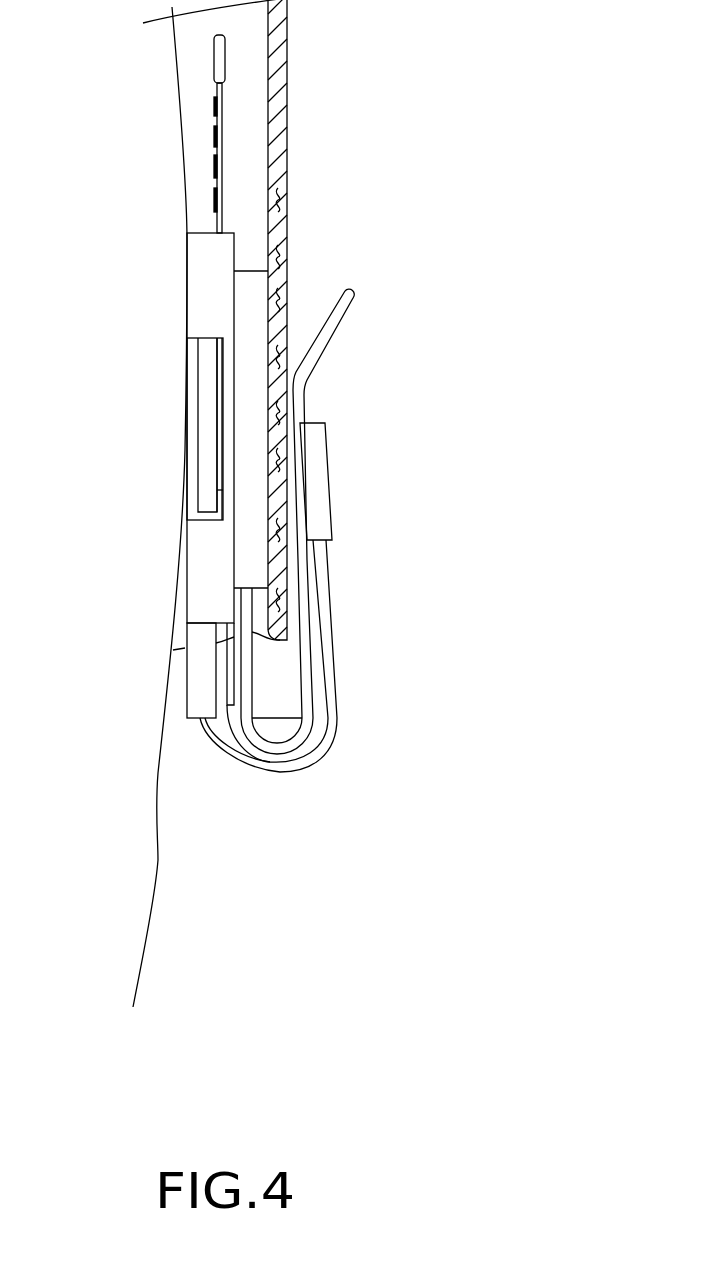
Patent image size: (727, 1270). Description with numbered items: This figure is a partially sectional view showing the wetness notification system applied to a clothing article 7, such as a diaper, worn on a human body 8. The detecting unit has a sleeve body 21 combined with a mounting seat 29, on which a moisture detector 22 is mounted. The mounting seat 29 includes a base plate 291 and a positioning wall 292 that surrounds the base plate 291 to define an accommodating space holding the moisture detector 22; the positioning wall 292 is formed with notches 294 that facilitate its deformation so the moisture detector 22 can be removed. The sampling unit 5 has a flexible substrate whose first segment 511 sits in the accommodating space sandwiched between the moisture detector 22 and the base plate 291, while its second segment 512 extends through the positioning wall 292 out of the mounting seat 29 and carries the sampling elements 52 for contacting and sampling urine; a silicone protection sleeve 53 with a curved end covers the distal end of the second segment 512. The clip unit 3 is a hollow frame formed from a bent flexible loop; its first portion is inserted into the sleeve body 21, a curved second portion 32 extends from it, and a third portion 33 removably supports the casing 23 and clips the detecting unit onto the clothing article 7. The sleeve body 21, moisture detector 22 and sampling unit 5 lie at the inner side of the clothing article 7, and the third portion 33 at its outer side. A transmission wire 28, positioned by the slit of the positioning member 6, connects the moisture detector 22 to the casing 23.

The clip unit 3 is at (346, 581).
The sampling unit 5 is at (212, 134).
The positioning member 6 is at (322, 638).
The clothing article 7 is at (288, 62).
The human body 8 is at (148, 940).
The sleeve body 21 is at (248, 285).
The moisture detector 22 is at (143, 422).
The casing 23 is at (328, 488).
The transmission wire 28 is at (318, 762).
The mounting seat 29 is at (143, 453).
The curved second portion 32 is at (278, 752).
The third portion 33 is at (345, 317).
The sampling elements 52 is at (207, 198).
The protection sleeve 53 is at (212, 60).
The base plate 291 is at (225, 488).
The positioning wall 292 is at (197, 282).
The notches 294 is at (217, 380).
The first segment 511 is at (215, 453).
The second segment 512 is at (223, 180).